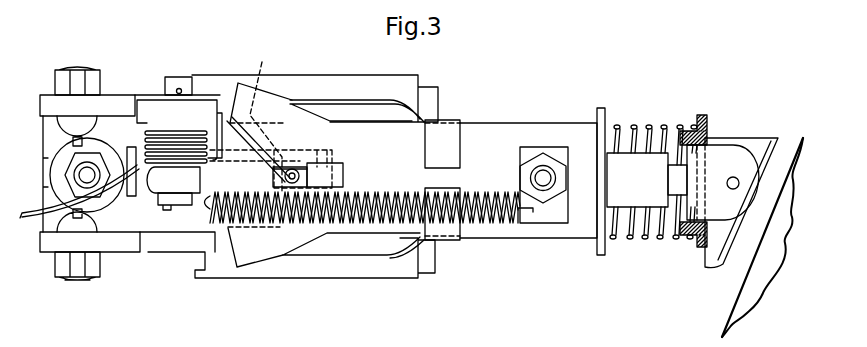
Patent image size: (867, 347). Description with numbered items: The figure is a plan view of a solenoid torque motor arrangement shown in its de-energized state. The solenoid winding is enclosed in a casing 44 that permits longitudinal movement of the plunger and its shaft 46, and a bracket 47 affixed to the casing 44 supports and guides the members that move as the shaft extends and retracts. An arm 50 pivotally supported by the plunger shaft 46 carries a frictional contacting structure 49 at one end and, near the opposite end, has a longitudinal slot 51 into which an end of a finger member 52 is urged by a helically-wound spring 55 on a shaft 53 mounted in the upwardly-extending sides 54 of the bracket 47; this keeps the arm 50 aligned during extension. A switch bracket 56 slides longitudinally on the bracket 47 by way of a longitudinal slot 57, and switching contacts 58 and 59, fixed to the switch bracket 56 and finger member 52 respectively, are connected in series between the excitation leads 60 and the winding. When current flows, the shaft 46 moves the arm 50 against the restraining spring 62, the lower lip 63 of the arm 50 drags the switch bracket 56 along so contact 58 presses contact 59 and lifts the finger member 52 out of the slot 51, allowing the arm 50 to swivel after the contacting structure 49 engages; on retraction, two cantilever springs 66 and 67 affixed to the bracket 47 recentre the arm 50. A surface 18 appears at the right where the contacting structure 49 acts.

The wall 18 is at (742, 290).
The casing 44 is at (365, 66).
The plunger shaft 46 is at (548, 181).
The bracket 47 is at (425, 258).
The frictional contacting structure 49 is at (737, 130).
The arm 50 is at (283, 106).
The longitudinal slot 51 is at (347, 172).
The finger member 52 is at (247, 140).
The shaft 53 is at (180, 76).
The upwardly-extending sides 54 is at (117, 110).
The helically-wound spring 55 is at (147, 143).
The switch bracket 56 is at (163, 197).
The longitudinal slot 57 is at (47, 168).
The electrical switching contact 58 is at (137, 182).
The electrical switching contact 59 is at (152, 177).
The excitation leads 60 is at (24, 220).
The restraining spring 62 is at (311, 227).
The lower lip 63 is at (266, 119).
The cantilever spring 66 is at (390, 101).
The cantilever spring 67 is at (368, 258).